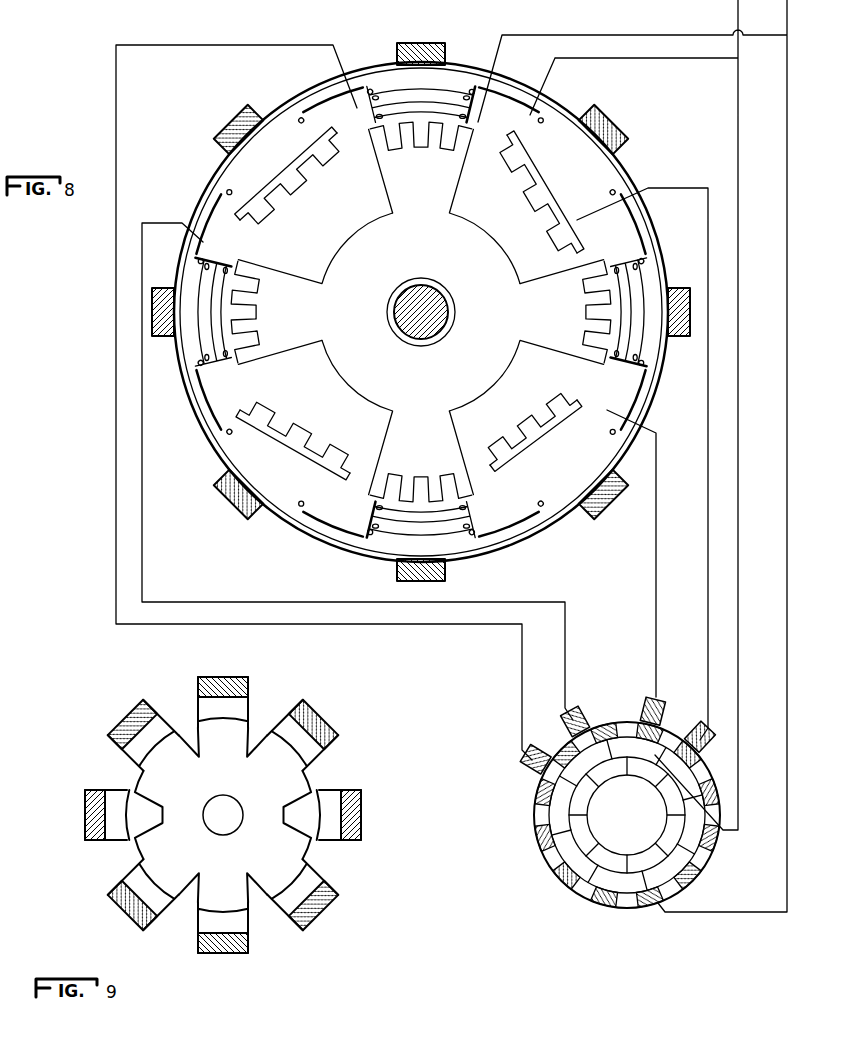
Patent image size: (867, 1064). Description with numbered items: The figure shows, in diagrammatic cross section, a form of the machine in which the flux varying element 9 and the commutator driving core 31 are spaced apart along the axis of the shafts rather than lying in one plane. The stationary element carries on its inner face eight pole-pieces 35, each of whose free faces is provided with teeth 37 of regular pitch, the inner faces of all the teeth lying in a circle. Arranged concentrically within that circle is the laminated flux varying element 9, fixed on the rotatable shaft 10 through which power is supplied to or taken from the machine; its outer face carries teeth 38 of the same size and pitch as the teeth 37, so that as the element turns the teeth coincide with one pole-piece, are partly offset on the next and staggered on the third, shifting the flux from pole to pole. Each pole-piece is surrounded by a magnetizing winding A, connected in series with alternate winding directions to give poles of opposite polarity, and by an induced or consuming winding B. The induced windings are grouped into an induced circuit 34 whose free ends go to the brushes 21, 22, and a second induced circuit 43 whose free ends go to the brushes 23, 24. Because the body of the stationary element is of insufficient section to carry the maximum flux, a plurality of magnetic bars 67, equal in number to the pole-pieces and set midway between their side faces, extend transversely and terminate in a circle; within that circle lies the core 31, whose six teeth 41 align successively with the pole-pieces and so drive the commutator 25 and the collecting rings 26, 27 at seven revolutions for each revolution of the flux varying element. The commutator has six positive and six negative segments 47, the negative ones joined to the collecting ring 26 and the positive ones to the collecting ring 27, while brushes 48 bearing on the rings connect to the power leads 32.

In FIG. 8, the flux varying element 9 is at (421, 312).
In FIG. 8, the rotatable shaft 10 is at (447, 297).
In FIG. 8, the pole-pieces 35 is at (257, 450).
In FIG. 8, the teeth 37 is at (676, 353).
In FIG. 8, the teeth 38 is at (318, 306).
In FIG. 8, the bars 67 is at (600, 511).
In FIG. 9, the bars 67 is at (262, 948).
In FIG. 8, the magnetizing winding A is at (602, 452).
In FIG. 8, the induced or consuming winding B is at (553, 470).
In FIG. 8, the power leads 32 is at (787, 99).
In FIG. 8, the induced or consuming circuit 34 is at (345, 602).
In FIG. 8, the induced circuit 43 is at (657, 650).
In FIG. 9, the core 31 is at (223, 815).
In FIG. 9, the teeth 41 is at (298, 853).
In FIG. 9, the commutator 25 is at (627, 815).
In FIG. 9, the collecting ring 26 is at (612, 853).
In FIG. 9, the collecting ring 27 is at (558, 848).
In FIG. 9, the commutator segments 47 is at (692, 878).
In FIG. 9, the brushes 48 is at (603, 907).
In FIG. 9, the brush 21 is at (580, 717).
In FIG. 9, the brush 22 is at (528, 767).
In FIG. 9, the brush 23 is at (703, 745).
In FIG. 9, the brush 24 is at (664, 706).